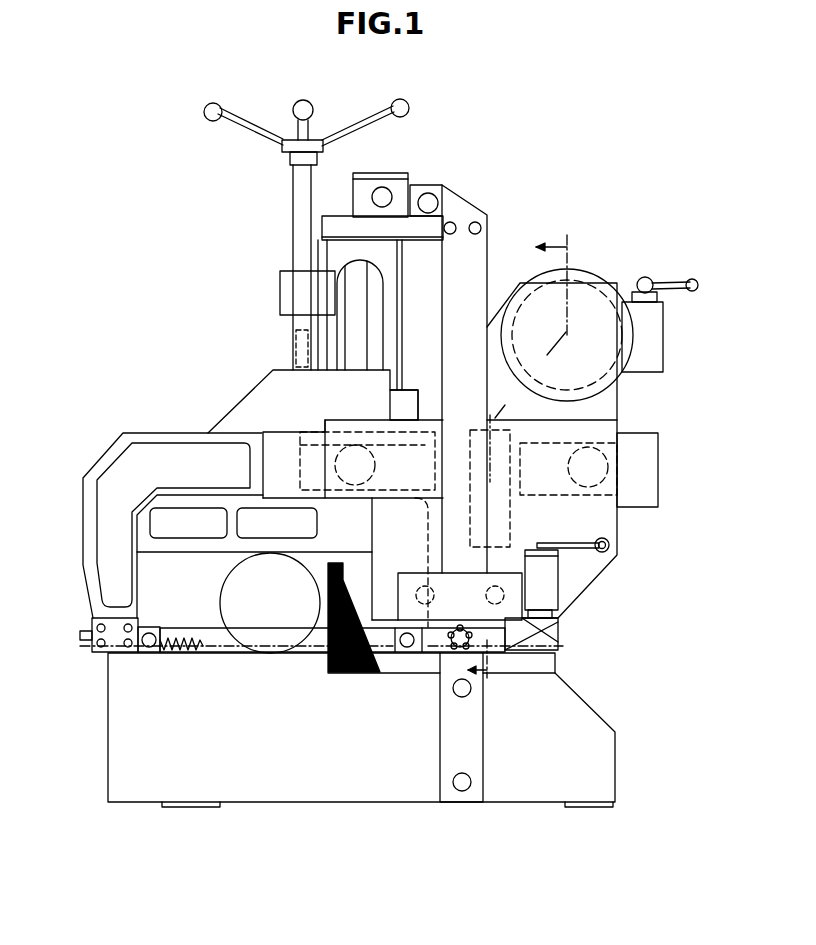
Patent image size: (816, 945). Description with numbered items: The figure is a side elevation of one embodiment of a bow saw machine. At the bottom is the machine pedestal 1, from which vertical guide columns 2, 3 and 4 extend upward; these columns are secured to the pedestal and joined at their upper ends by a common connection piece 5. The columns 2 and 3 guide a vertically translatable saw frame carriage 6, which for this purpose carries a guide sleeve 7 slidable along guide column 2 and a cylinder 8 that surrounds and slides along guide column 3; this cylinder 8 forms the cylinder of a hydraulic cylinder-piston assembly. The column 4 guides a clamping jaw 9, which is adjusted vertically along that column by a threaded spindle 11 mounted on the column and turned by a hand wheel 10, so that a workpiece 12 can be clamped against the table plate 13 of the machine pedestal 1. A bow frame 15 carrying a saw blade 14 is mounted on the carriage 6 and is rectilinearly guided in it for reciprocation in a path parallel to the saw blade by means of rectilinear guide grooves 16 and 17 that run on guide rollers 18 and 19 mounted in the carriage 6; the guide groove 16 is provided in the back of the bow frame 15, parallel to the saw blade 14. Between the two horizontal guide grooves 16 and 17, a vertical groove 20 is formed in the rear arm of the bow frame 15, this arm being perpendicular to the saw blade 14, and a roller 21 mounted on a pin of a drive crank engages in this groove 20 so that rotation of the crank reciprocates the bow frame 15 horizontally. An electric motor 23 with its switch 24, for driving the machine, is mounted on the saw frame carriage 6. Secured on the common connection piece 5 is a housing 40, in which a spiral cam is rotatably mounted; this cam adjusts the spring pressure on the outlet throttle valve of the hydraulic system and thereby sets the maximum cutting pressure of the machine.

The machine pedestal 1 is at (312, 778).
The vertical guide column 2 is at (472, 793).
The vertical guide column 3 is at (390, 247).
The vertical guide column 4 is at (333, 252).
The common connection piece 5 is at (430, 228).
The saw frame carriage 6 is at (570, 588).
The guide sleeve 7 is at (548, 640).
The cylinder 8 is at (288, 378).
The clamping jaw 9 is at (403, 405).
The hand wheel 10 is at (295, 140).
The threaded spindle 11 is at (297, 206).
The workpiece 12 is at (238, 610).
The table plate 13 is at (263, 655).
The saw blade 14 is at (178, 657).
The bow frame 15 is at (113, 573).
The rectilinear guide groove 16 is at (298, 462).
The rectilinear guide groove 17 is at (647, 457).
The guide roller 18 is at (353, 462).
The guide roller 19 is at (590, 473).
The vertical groove 20 is at (495, 515).
The roller 21 is at (500, 457).
The electric motor 23 is at (577, 295).
The switch 24 is at (645, 279).
The housing 40 is at (395, 185).